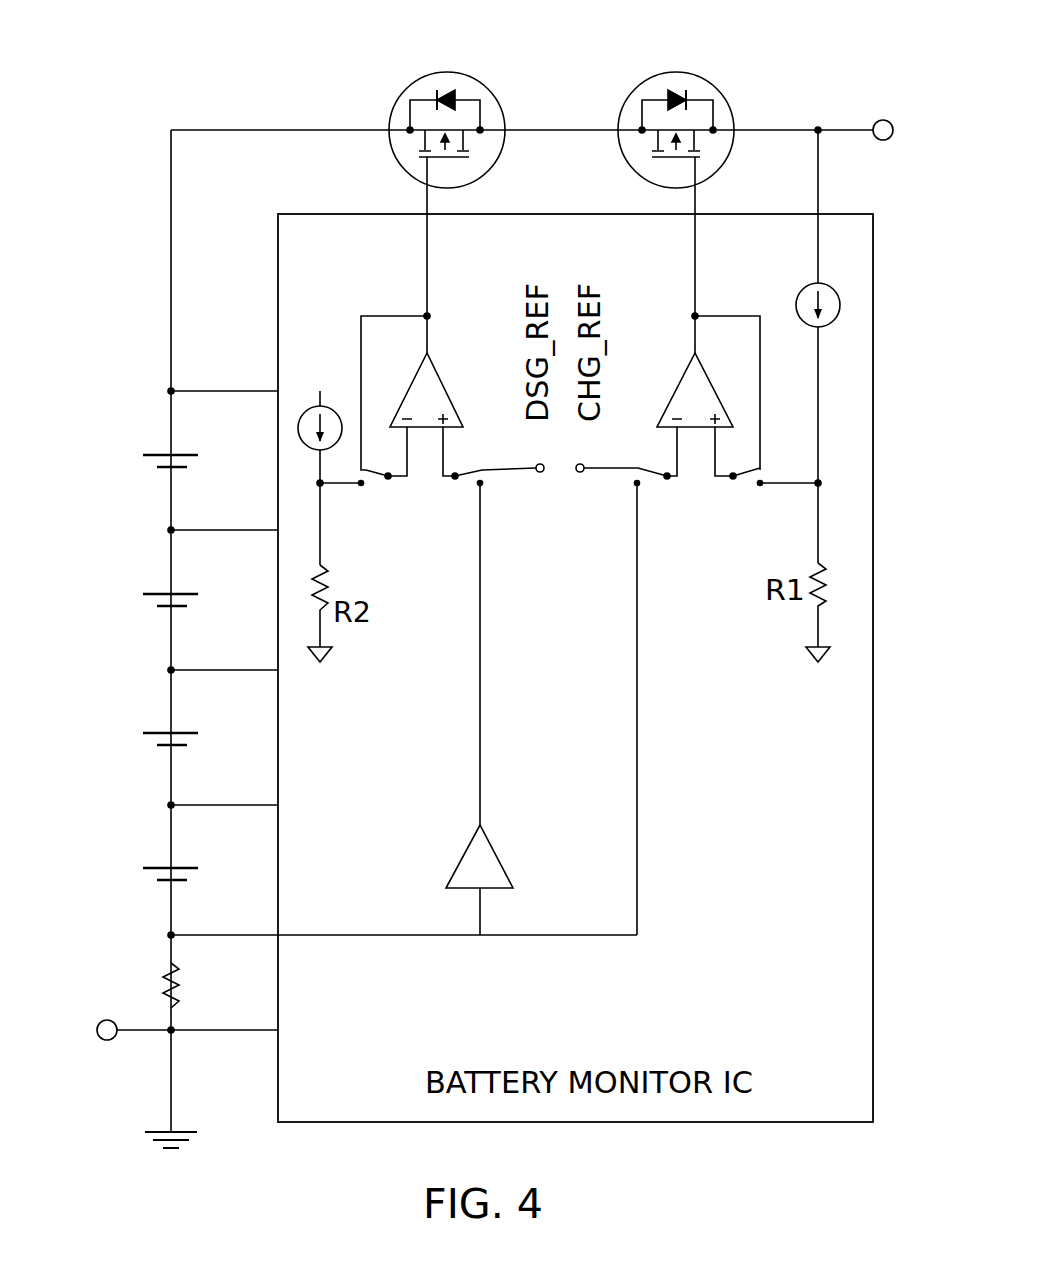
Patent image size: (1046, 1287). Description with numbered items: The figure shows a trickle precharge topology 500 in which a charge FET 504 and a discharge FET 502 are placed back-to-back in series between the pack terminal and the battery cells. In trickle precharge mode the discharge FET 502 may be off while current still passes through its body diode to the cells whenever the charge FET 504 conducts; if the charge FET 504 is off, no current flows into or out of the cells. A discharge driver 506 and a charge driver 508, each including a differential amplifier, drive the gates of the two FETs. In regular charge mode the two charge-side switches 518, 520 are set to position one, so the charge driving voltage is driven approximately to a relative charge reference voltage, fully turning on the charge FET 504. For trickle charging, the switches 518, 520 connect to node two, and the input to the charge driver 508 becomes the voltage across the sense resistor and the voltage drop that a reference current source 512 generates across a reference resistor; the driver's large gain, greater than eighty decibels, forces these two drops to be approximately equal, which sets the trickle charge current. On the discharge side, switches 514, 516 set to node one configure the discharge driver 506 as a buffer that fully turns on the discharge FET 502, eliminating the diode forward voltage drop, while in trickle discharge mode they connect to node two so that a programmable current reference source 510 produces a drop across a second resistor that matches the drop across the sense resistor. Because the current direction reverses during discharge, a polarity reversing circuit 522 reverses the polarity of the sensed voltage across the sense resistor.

The trickle precharge topology 500 is at (195, 108).
The discharge FET 502 is at (396, 106).
The charge FET 504 is at (640, 106).
The discharge driver 506 is at (451, 400).
The charge driver 508 is at (663, 395).
The reference current source Iref2 510 is at (298, 447).
The reference current source Iref1 512 is at (840, 305).
The switch K4 514 is at (362, 497).
The switch K3 516 is at (494, 497).
The switch K1 518 is at (635, 488).
The switch K2 520 is at (762, 489).
The polarity reversing circuit 522 is at (455, 866).